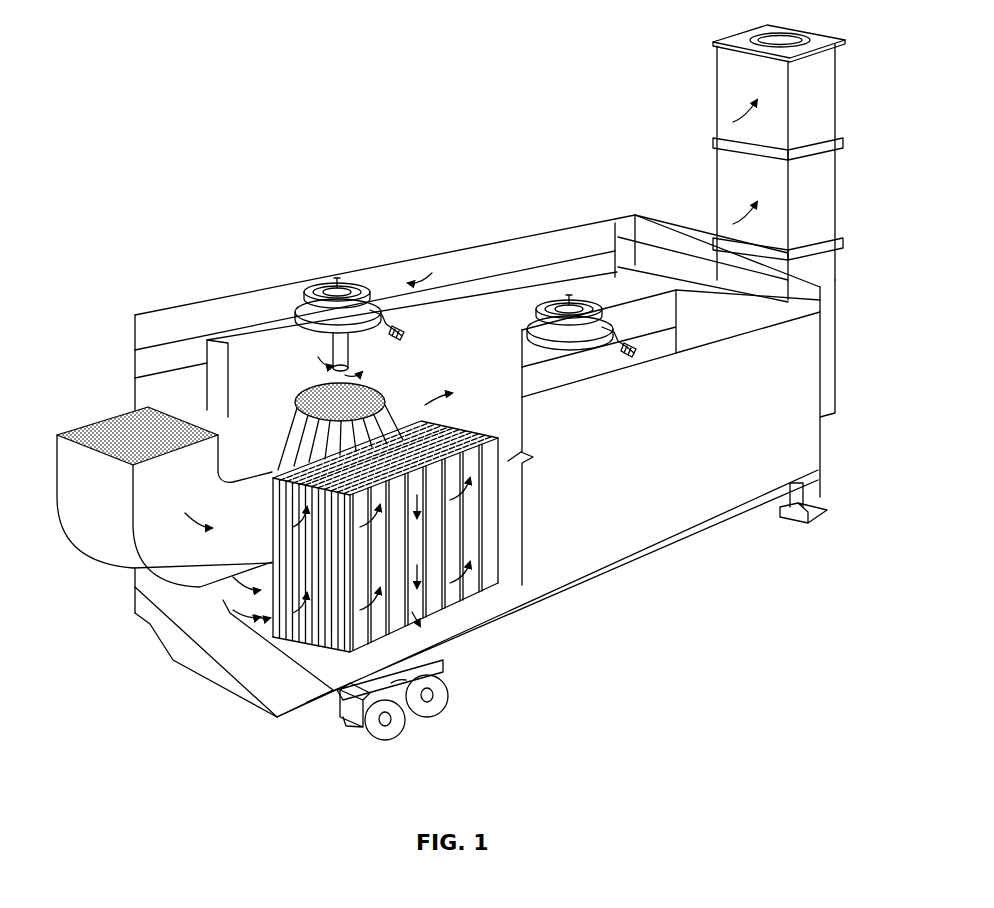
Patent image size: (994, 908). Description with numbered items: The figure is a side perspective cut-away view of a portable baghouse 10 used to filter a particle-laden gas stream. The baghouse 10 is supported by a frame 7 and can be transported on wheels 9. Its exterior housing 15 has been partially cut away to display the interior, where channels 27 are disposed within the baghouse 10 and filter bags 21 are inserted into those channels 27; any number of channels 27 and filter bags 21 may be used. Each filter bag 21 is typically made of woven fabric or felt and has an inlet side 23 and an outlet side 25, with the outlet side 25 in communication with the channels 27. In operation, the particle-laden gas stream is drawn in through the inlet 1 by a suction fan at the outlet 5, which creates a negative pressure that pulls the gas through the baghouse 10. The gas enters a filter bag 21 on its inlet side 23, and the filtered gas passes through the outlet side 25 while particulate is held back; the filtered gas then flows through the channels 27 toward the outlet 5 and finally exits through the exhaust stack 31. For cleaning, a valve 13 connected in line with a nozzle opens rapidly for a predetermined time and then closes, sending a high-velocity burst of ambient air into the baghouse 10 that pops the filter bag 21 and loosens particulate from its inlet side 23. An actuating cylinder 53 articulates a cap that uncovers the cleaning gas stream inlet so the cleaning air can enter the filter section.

The inlet 1 is at (112, 420).
The outlet 5 is at (822, 383).
The frame 7 is at (497, 617).
The wheels 9 is at (443, 707).
The baghouse 10 is at (495, 327).
The valve 13 is at (335, 278).
The exterior housing 15 is at (522, 528).
The filter bags 21 is at (255, 615).
The inlet side 23 is at (345, 630).
The outlet side 25 is at (277, 493).
The channels 27 is at (300, 440).
The exhaust stack 31 is at (822, 197).
The actuating cylinder 53 is at (381, 297).